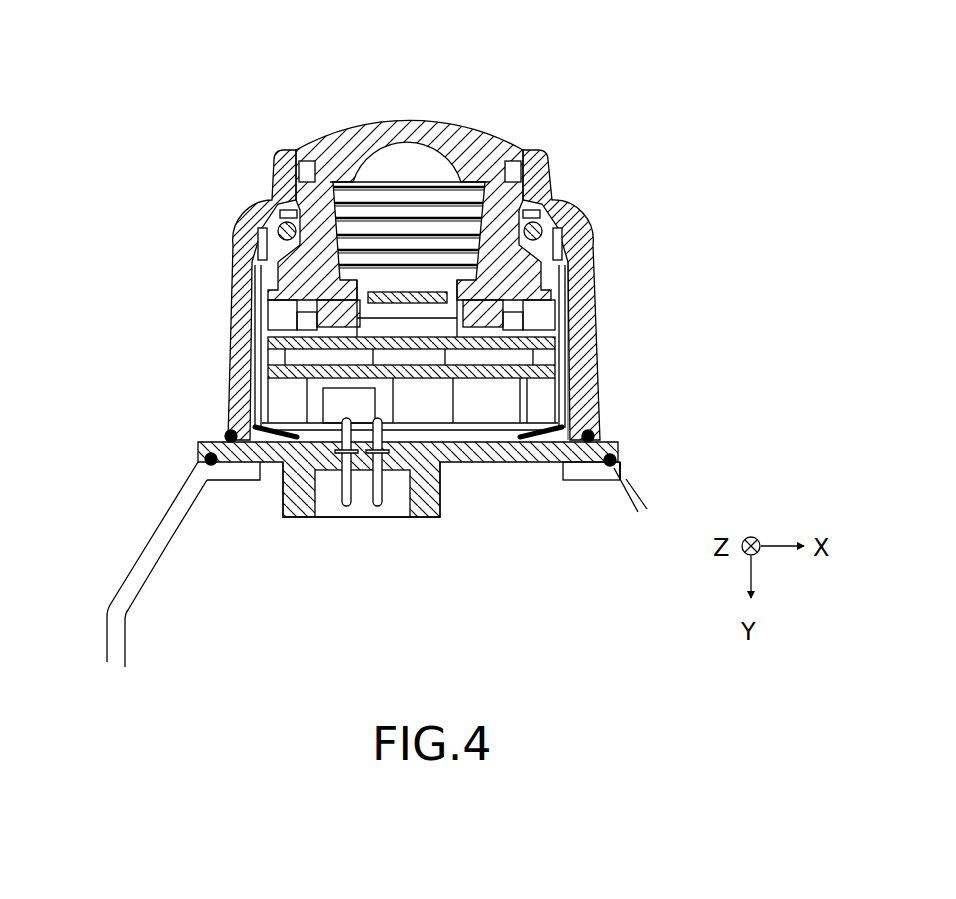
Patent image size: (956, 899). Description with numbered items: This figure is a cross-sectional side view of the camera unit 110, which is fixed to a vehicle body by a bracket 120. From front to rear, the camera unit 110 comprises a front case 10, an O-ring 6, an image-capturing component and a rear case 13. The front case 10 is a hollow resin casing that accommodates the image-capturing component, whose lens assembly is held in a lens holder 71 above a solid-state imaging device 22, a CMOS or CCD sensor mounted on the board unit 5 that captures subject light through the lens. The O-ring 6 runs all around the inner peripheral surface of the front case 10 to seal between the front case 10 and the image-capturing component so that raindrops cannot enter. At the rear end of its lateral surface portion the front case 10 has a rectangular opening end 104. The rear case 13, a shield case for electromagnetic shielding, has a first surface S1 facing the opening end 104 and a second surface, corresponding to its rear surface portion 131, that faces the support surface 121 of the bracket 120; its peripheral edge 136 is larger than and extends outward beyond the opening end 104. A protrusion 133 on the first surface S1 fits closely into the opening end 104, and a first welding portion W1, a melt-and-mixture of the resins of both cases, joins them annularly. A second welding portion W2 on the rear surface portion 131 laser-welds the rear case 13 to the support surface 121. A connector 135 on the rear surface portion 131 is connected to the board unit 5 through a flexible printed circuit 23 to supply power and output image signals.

The camera unit 110 is at (585, 97).
The front case 10 is at (244, 213).
The lens holder of lens unit 7 71 is at (507, 210).
The O-ring 6 is at (283, 229).
The solid-state imaging device 22 is at (357, 318).
The board unit 5 is at (540, 343).
The protrusion 133 is at (597, 378).
The opening end 104 is at (222, 430).
The first surface S1 is at (225, 436).
The first welding portion W1 is at (597, 431).
The rear case 13 is at (198, 444).
The connector 135 is at (328, 503).
The support surface 121 is at (242, 465).
The bracket 120 is at (117, 612).
The rear surface portion 131 is at (518, 463).
The peripheral edge 136 is at (618, 458).
The second welding portion W2 is at (610, 483).
The flexible printed circuit 23 is at (440, 420).